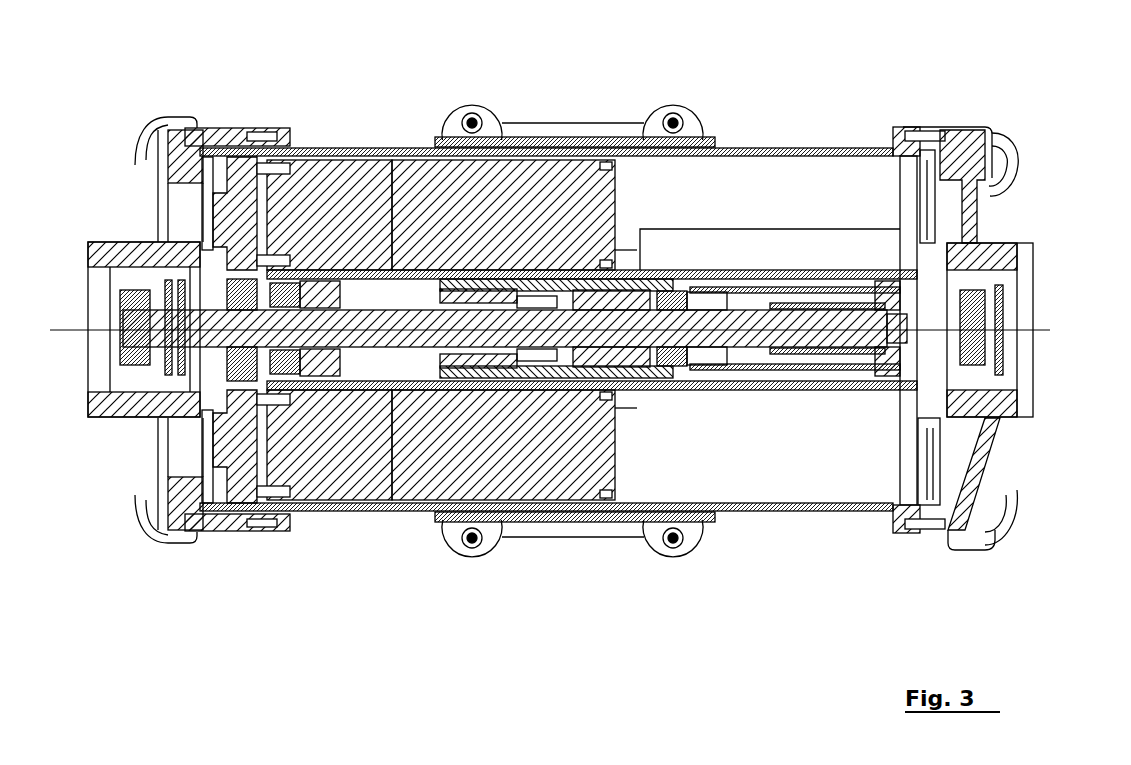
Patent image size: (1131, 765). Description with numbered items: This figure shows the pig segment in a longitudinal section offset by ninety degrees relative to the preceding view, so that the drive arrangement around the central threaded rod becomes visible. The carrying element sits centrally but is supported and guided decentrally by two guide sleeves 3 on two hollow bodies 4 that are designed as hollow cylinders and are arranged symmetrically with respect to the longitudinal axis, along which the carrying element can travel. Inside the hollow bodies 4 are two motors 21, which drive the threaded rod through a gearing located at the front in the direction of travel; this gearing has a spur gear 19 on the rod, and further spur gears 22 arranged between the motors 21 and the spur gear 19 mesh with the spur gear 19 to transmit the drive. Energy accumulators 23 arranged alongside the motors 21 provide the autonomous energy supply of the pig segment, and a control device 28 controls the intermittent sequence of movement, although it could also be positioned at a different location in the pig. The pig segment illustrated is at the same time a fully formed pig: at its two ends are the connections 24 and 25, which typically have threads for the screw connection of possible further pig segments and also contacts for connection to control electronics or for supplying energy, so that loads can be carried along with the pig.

The guide sleeve 3 is at (578, 142).
The hollow body 4 is at (781, 147).
The spur gear 19 is at (240, 363).
The motor 21 is at (345, 170).
The further spur gear 22 is at (250, 146).
The energy accumulator 23 is at (488, 193).
The connection 24 is at (114, 215).
The connection 25 is at (1042, 223).
The control device 28 is at (725, 252).